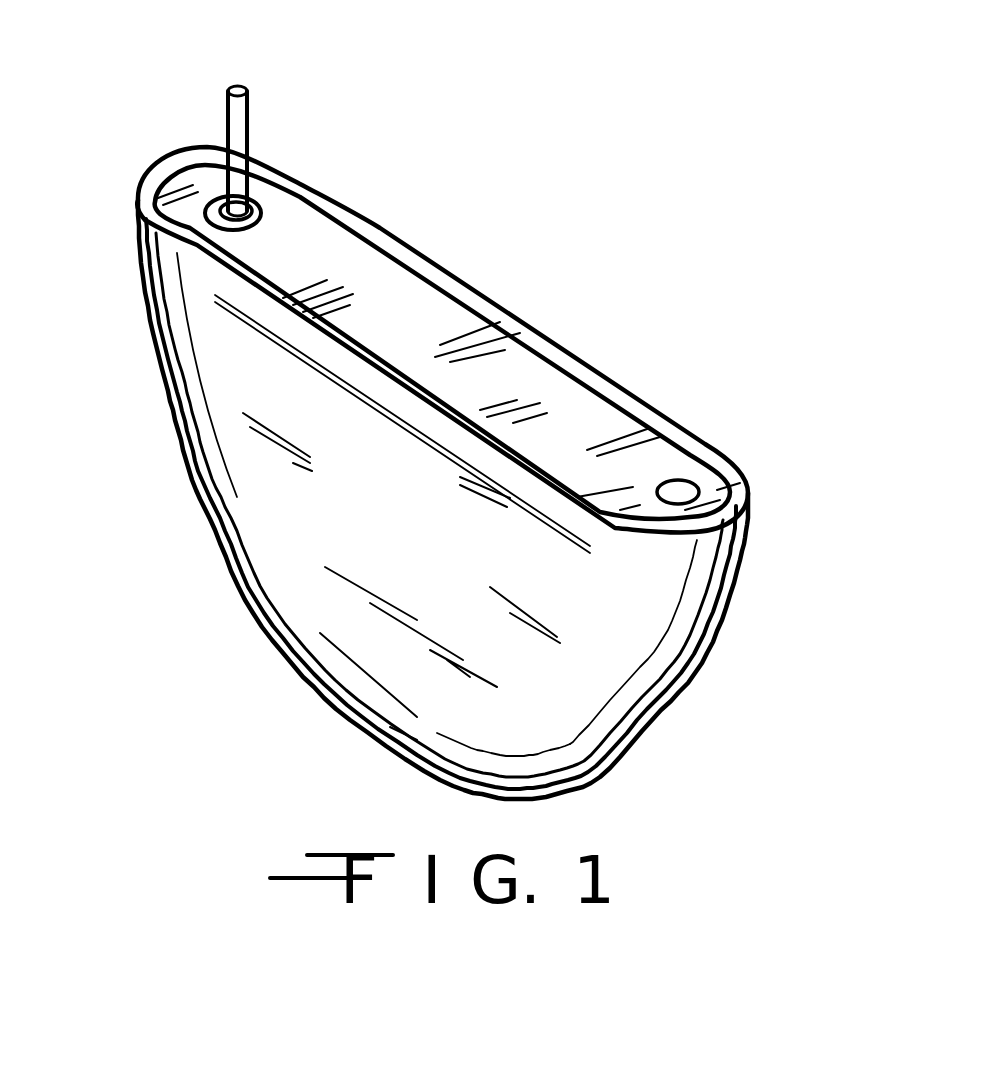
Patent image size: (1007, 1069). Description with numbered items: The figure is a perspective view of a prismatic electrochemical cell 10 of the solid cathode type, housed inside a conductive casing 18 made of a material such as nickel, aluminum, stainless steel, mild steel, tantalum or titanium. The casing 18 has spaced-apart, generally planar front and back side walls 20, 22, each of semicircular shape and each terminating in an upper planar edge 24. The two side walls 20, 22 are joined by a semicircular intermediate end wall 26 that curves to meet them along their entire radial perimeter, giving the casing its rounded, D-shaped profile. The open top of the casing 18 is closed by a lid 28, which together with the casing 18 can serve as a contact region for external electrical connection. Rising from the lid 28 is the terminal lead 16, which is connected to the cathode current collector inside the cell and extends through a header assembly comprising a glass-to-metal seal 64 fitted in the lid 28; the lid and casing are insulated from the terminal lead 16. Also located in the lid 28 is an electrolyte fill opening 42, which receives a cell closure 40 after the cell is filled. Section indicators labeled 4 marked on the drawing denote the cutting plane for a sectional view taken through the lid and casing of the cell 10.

The prismatic electrochemical cell 10 is at (598, 222).
The terminal lead 16 is at (253, 113).
The conductive casing 18 is at (255, 380).
The front side wall 20 is at (280, 487).
The back side wall 22 is at (733, 590).
The upper planar edge 24 is at (443, 415).
The semicircular intermediate end wall 26 is at (345, 720).
The lid 28 is at (405, 302).
The cell closure 40 is at (687, 490).
The electrolyte fill opening 42 is at (677, 478).
The glass-to-metal seal 64 is at (283, 186).
The section line 4- 4 is at (152, 147).